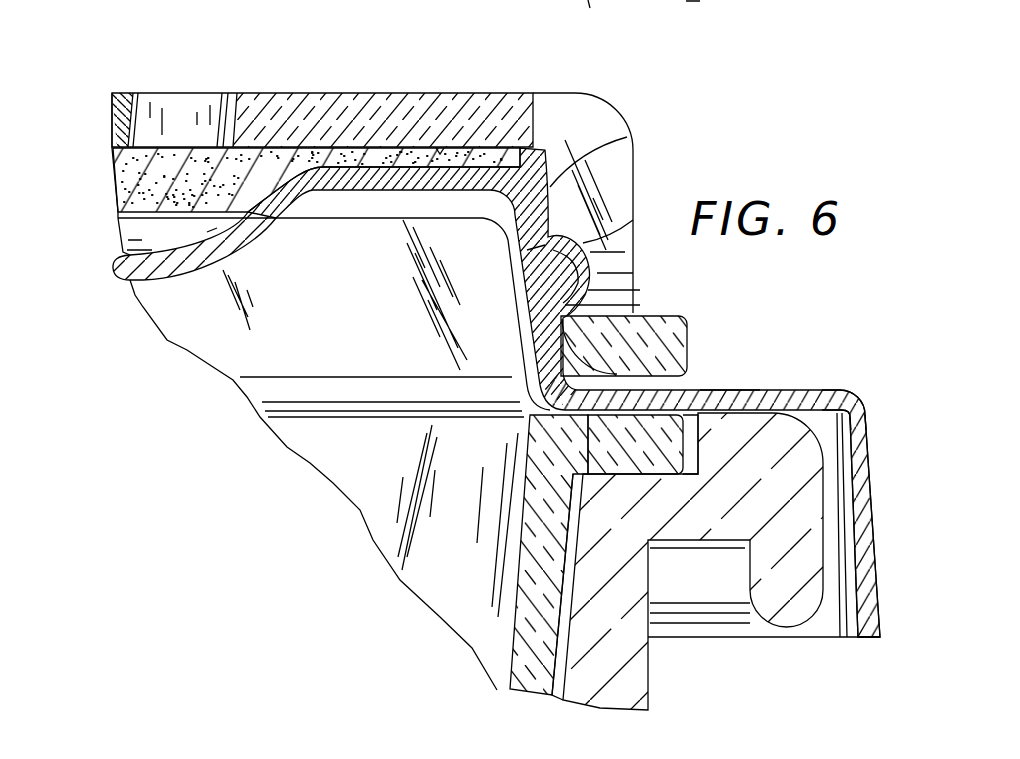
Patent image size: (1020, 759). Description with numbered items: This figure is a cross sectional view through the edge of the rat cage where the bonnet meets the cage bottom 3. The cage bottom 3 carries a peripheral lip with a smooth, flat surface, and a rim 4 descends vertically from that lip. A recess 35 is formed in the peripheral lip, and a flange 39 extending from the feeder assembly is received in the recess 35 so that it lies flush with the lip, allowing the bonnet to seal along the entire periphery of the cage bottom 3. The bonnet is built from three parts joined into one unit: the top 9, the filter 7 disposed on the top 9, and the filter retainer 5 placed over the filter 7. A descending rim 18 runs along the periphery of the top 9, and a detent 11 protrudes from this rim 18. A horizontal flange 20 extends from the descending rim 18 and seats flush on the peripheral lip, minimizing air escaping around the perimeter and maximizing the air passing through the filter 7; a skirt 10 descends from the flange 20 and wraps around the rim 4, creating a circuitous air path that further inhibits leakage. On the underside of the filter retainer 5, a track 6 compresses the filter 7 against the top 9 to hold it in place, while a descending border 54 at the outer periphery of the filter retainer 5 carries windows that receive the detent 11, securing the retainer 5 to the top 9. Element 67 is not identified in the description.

The cage bottom 3 is at (648, 657).
The rim 4 is at (795, 605).
The filter retainer 5 is at (388, 93).
The track 6 is at (440, 148).
The filter 7 is at (140, 182).
The top 9 is at (183, 273).
The skirt 10 is at (870, 520).
The detent 11 is at (633, 218).
The descending rim 18 is at (622, 129).
The horizontal flange 20 is at (813, 387).
The recess 35 is at (732, 388).
The flange 39 is at (688, 388).
The descending border 54 is at (638, 272).
The spacer block 67 is at (530, 612).